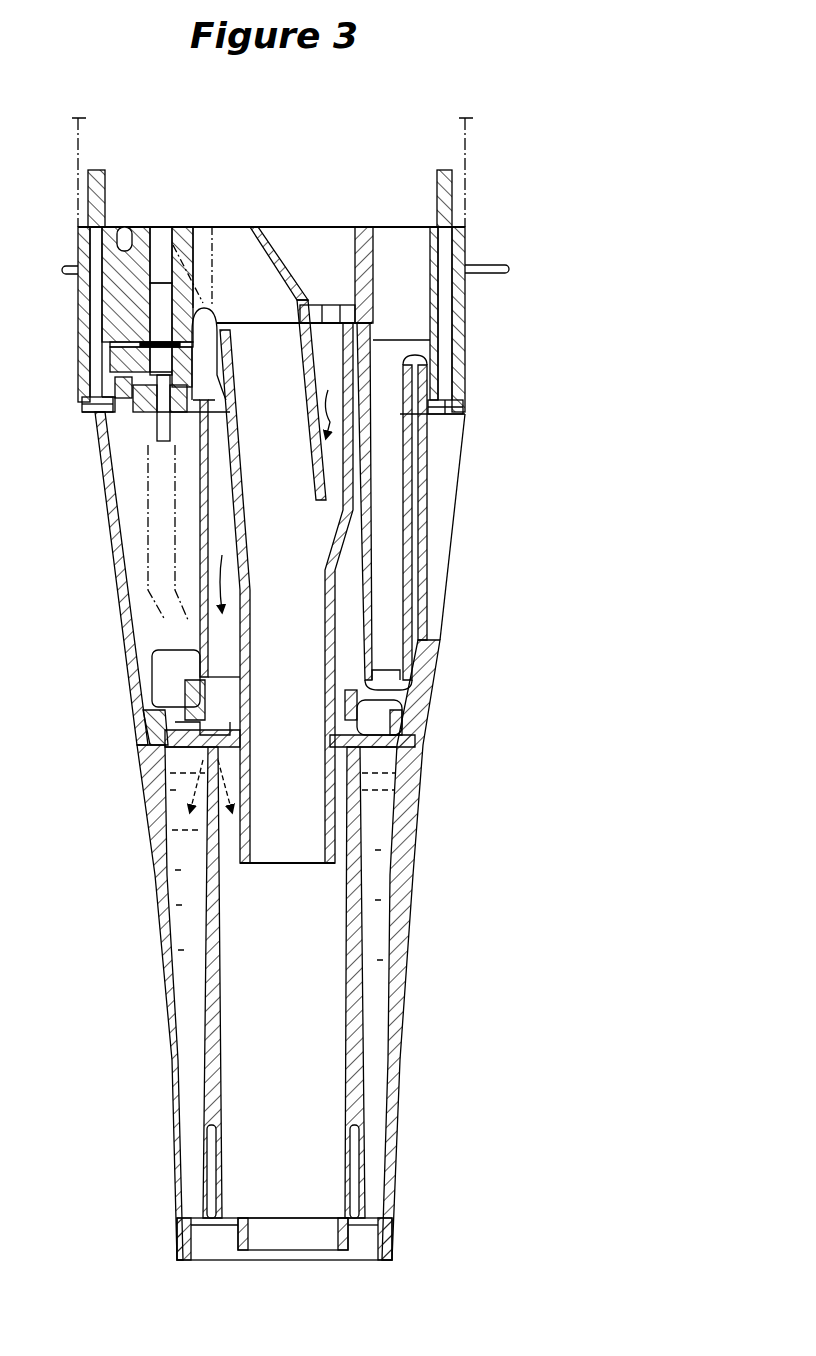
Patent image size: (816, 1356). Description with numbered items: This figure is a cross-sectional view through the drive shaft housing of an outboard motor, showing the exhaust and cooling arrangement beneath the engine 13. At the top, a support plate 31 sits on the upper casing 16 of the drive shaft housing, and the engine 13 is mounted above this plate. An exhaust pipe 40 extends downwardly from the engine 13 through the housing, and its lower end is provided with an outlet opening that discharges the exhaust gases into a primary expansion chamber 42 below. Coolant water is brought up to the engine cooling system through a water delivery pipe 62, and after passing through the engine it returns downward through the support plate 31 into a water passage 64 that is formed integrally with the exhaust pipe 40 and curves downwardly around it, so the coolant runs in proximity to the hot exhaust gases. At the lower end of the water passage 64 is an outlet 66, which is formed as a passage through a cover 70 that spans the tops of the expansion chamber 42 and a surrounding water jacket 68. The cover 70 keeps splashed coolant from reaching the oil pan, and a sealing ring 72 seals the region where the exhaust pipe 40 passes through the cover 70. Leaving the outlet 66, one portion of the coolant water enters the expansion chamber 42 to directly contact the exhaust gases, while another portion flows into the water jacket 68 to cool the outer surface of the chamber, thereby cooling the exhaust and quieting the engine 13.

The engine 13 is at (467, 150).
The support plate 31 is at (468, 254).
The water delivery pipe 62 is at (150, 416).
The water passage 64 is at (212, 636).
The outlet 66 is at (190, 690).
The upper casing 16 is at (442, 660).
The sealing ring 72 is at (357, 704).
The cover 70 is at (410, 718).
The exhaust pipe 40 is at (336, 822).
The primary expansion chamber 42 is at (299, 931).
The water jacket 68 is at (167, 925).